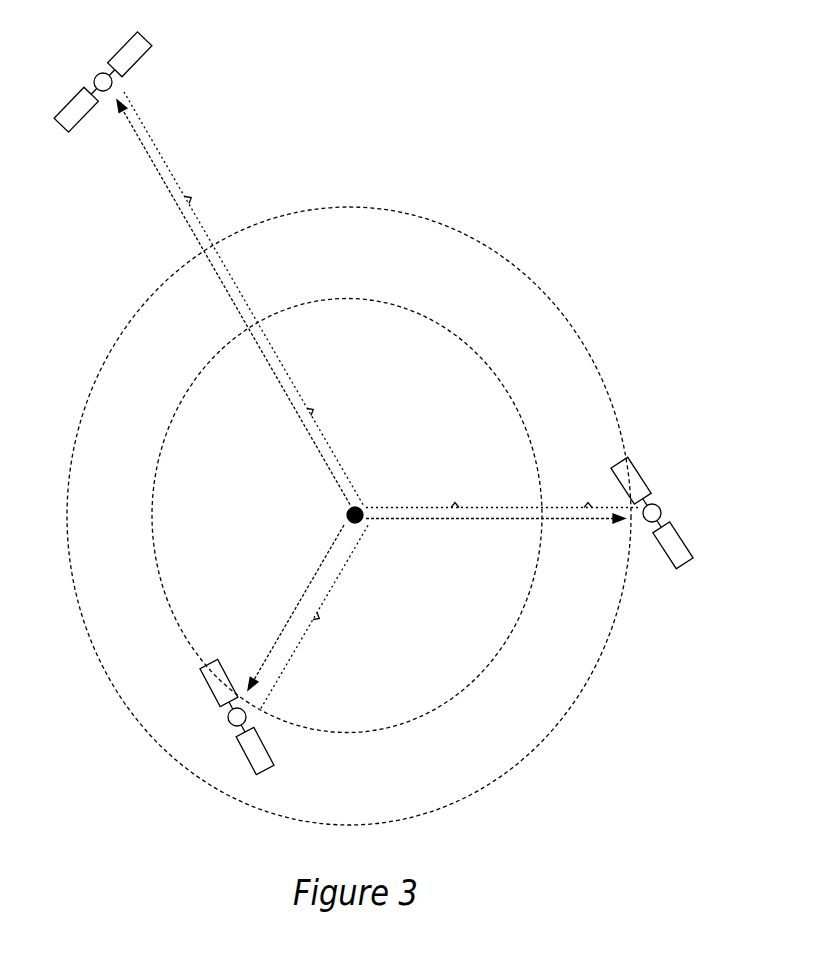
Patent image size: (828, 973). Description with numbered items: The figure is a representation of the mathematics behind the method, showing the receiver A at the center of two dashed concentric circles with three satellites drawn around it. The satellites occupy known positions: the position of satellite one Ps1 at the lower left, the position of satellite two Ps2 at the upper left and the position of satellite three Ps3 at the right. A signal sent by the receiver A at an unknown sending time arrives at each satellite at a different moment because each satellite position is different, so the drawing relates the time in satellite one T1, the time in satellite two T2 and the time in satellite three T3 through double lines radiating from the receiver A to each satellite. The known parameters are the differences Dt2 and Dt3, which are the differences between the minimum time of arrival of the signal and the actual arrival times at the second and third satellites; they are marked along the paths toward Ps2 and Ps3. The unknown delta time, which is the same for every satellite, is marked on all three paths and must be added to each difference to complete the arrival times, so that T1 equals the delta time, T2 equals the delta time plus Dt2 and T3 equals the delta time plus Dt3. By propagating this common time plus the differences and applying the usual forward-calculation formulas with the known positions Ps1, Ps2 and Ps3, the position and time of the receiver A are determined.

The receiver / reference point at center A is at (344, 515).
The position of satellite 1 Ps1 is at (216, 720).
The position of satellite 2 Ps2 is at (83, 68).
The position of satellite 3 Ps3 is at (668, 507).
The time in satellite 1 T1 is at (237, 717).
The time in satellite 2 T2 is at (103, 78).
The time in satellite 3 T3 is at (652, 511).
The time-of-arrival difference for satellite 2 Dt2 is at (240, 298).
The time-of-arrival difference for satellite 3 Dt3 is at (503, 491).